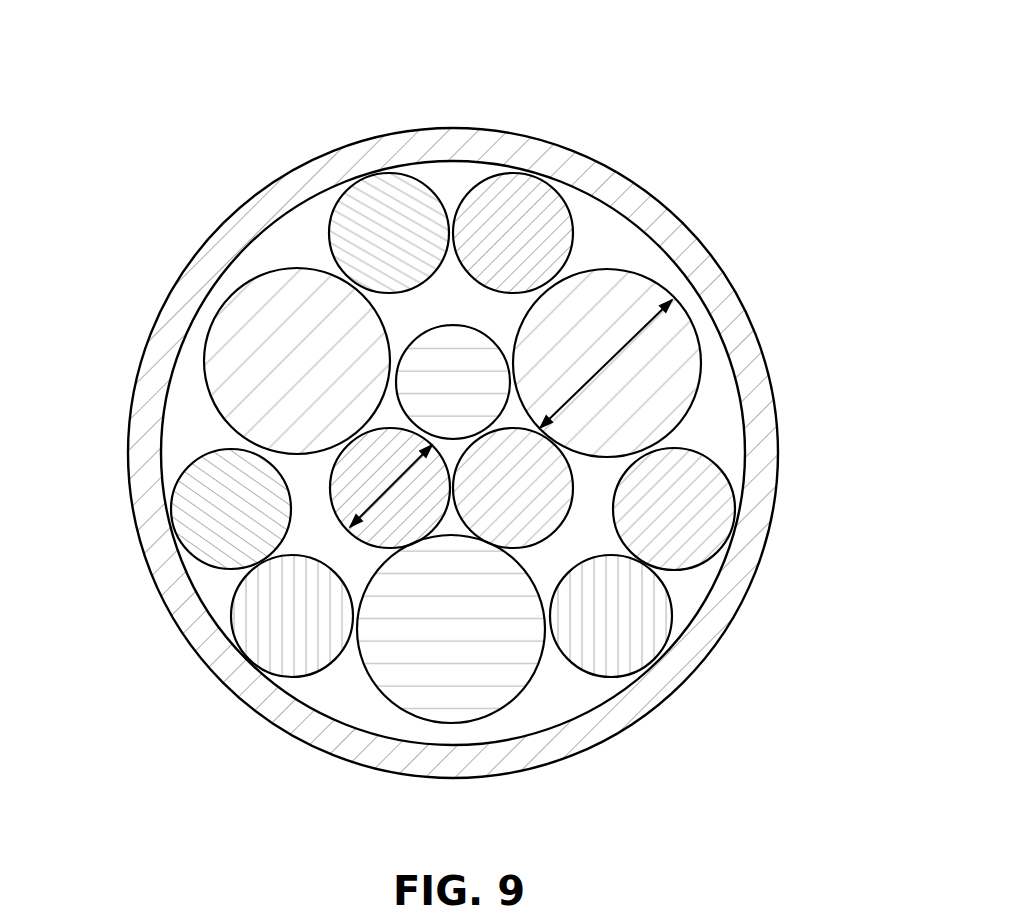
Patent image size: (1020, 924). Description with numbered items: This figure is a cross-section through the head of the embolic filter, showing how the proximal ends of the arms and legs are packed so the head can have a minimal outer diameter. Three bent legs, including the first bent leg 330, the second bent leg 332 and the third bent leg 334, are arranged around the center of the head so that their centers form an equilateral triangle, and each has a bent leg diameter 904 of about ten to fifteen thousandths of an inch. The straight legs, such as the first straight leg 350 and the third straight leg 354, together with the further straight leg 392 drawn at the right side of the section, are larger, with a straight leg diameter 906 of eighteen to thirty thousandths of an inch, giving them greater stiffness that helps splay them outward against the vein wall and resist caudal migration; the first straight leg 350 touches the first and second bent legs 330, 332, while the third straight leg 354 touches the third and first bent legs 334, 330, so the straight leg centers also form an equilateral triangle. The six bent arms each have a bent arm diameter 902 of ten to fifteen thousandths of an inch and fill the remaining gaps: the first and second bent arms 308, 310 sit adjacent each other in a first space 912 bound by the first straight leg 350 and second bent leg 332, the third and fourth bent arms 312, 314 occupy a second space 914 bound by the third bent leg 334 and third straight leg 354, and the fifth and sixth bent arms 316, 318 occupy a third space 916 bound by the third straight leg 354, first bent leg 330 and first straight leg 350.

The bent arm diameter 902 is at (453, 433).
The first space 912 is at (453, 391).
The first bent arm 308 is at (425, 158).
The second bent arm 310 is at (579, 194).
The first straight leg 350 is at (209, 313).
The second large conductor 392 is at (689, 343).
The second bent leg 332 is at (592, 288).
The bent leg diameter 904 is at (239, 464).
The straight leg diameter 906 is at (676, 424).
The sixth bent arm 318 is at (160, 504).
The third bent arm 312 is at (743, 525).
The fifth bent arm 316 is at (241, 655).
The fourth bent arm 314 is at (670, 641).
The third straight leg 354 is at (464, 691).
The third bent leg 334 is at (616, 676).
The first bent leg 330 is at (196, 599).
The third space 916 is at (145, 606).
The second space 914 is at (758, 614).